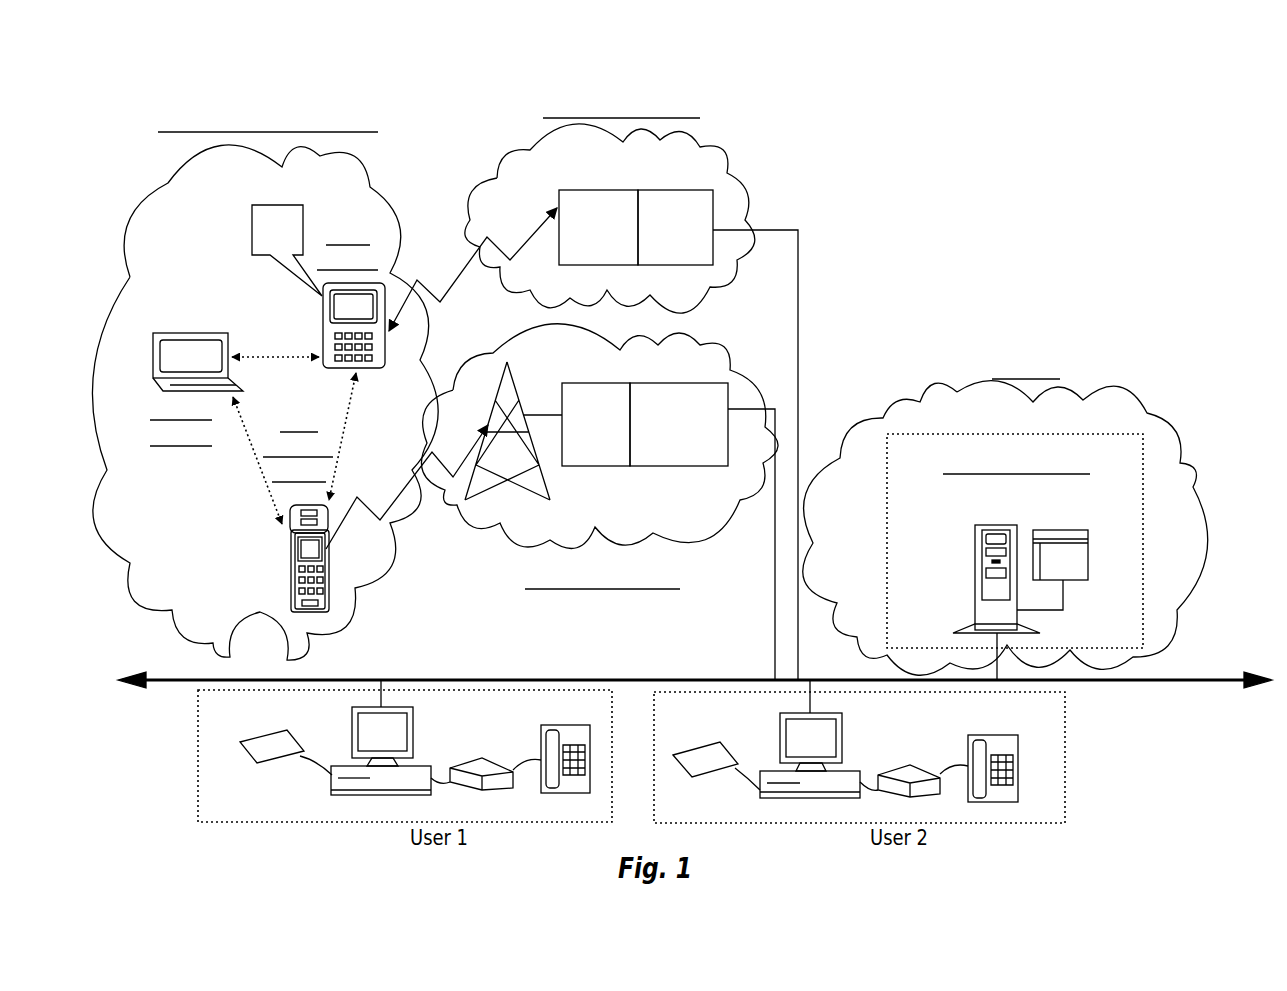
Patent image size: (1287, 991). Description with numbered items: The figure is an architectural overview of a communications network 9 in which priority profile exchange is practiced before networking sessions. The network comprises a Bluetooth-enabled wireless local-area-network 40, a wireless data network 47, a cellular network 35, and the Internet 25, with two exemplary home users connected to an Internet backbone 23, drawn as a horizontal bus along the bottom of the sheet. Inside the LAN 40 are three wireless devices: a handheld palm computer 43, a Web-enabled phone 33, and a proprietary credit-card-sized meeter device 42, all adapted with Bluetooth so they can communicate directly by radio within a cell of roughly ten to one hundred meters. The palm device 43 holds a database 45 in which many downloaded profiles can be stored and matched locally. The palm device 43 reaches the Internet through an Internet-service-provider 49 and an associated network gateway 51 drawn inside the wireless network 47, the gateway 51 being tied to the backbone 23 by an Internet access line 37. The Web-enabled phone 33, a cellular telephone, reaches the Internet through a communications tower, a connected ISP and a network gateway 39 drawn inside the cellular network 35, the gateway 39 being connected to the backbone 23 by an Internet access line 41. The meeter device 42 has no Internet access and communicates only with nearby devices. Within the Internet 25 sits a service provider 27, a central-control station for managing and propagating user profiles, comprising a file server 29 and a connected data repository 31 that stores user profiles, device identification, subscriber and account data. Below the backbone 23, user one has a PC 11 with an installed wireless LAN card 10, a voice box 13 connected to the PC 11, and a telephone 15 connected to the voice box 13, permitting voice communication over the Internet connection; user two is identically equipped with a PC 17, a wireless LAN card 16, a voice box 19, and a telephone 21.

The communications network 9 is at (224, 78).
The wireless local-area-network 40 is at (132, 246).
The database 45 is at (303, 222).
The handheld computer 43 is at (323, 303).
The meeter device 42 is at (212, 333).
The Web-enabled phone 33 is at (290, 592).
The wireless data network 47 is at (733, 168).
The Internet-service-provider 49 is at (594, 190).
The network gateway 51 is at (700, 190).
The Internet access line 37 is at (798, 312).
The network gateway 39 is at (695, 466).
The cellular network 35 is at (746, 382).
The Internet access line 41 is at (775, 658).
The data-packet-network 25 is at (955, 388).
The service provider 27 is at (884, 592).
The file server 29 is at (975, 583).
The data repository 31 is at (1050, 530).
The Internet backbone 23 is at (1196, 684).
The wireless LAN card 10 is at (268, 735).
The PC 11 is at (352, 745).
The voice box 13 is at (450, 775).
The telephone 15 is at (541, 750).
The wireless LAN card 16 is at (706, 738).
The PC 17 is at (780, 752).
The voice box 19 is at (878, 778).
The telephone 21 is at (968, 758).